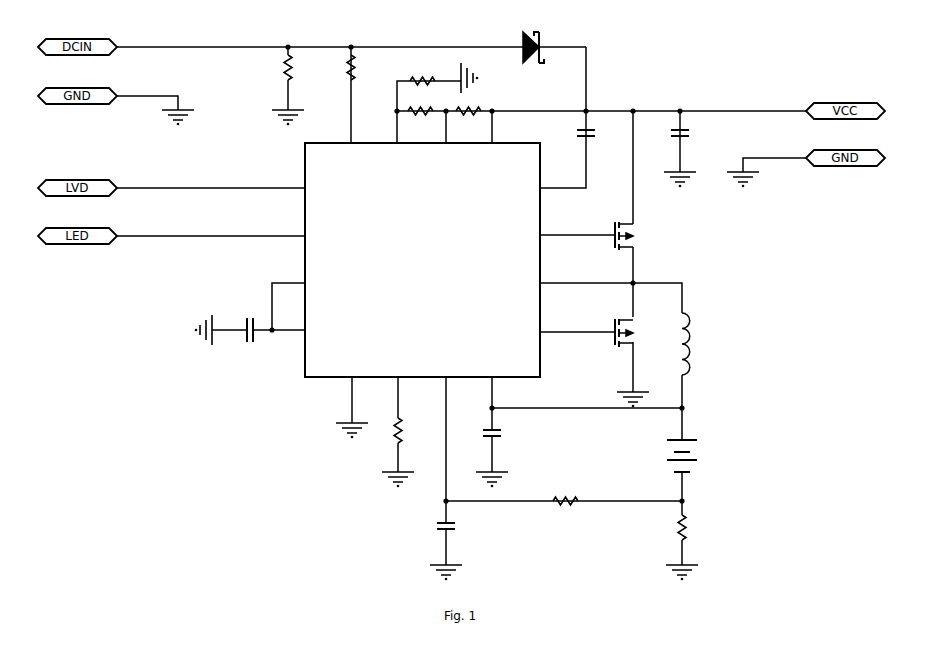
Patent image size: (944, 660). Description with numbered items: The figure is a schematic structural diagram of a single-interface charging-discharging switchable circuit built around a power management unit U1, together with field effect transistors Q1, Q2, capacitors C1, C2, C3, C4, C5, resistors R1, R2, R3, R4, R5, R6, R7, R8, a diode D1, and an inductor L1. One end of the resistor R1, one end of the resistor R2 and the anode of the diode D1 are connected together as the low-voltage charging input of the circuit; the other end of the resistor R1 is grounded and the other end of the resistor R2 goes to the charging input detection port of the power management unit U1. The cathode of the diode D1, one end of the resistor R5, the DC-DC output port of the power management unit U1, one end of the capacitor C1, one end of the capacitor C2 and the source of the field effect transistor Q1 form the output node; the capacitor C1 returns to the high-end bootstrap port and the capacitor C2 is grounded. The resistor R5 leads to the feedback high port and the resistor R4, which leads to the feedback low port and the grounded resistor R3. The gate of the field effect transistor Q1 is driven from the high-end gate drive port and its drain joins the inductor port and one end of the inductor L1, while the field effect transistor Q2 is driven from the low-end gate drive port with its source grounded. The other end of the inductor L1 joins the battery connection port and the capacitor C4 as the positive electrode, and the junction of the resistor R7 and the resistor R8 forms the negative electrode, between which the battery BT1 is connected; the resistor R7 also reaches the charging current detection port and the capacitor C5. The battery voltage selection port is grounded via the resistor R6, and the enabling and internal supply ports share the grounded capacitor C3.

The resistor R1 is at (291, 86).
The resistor R2 is at (360, 67).
The resistor R3 is at (421, 75).
The resistor R4 is at (420, 105).
The resistor R5 is at (468, 105).
The resistor R6 is at (401, 432).
The resistor R7 is at (562, 494).
The resistor R8 is at (685, 540).
The capacitor C1 is at (594, 134).
The capacitor C2 is at (688, 134).
The capacitor C3 is at (248, 322).
The capacitor C4 is at (497, 447).
The capacitor C5 is at (451, 540).
The diode D1 is at (554, 39).
The field effect transistor Q1 is at (636, 236).
The field effect transistor Q2 is at (636, 331).
The inductor L1 is at (693, 344).
The battery BT1 is at (693, 454).
The power management unit U1 is at (426, 255).